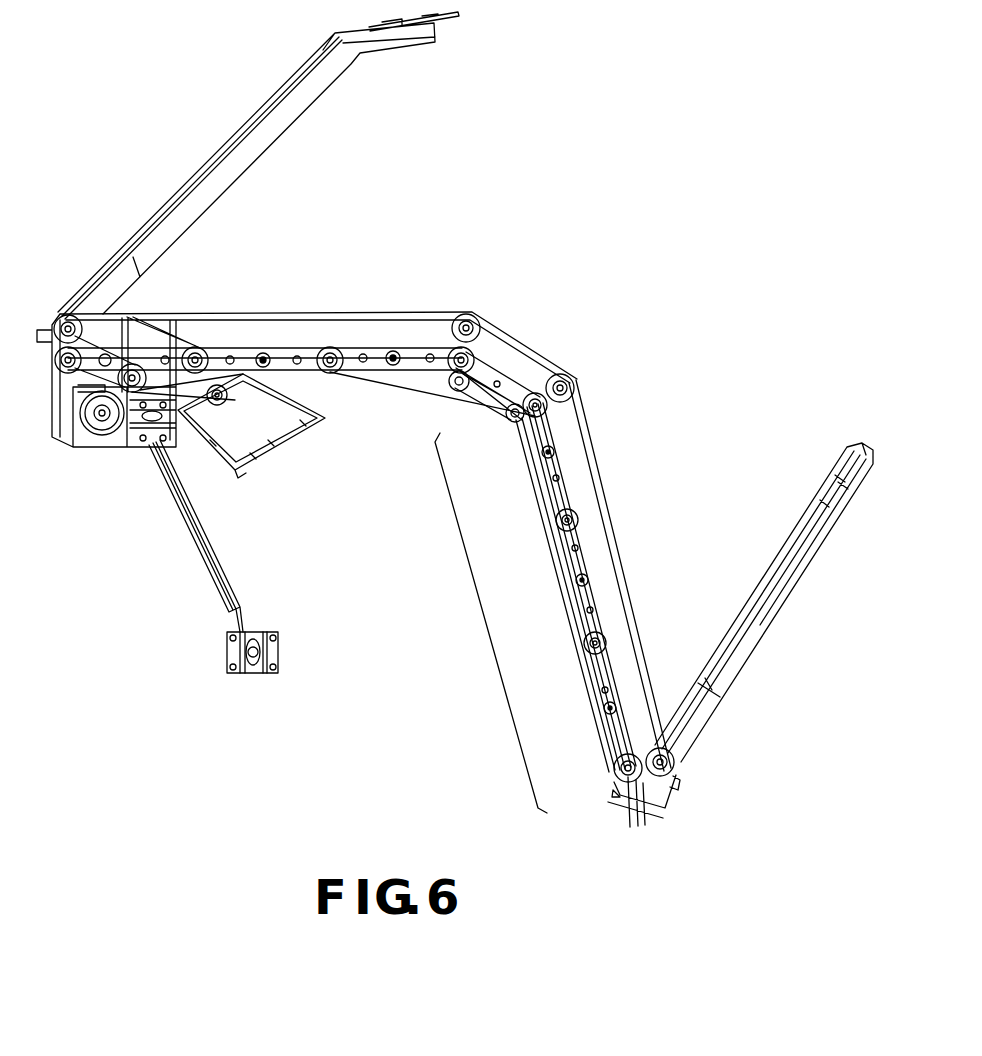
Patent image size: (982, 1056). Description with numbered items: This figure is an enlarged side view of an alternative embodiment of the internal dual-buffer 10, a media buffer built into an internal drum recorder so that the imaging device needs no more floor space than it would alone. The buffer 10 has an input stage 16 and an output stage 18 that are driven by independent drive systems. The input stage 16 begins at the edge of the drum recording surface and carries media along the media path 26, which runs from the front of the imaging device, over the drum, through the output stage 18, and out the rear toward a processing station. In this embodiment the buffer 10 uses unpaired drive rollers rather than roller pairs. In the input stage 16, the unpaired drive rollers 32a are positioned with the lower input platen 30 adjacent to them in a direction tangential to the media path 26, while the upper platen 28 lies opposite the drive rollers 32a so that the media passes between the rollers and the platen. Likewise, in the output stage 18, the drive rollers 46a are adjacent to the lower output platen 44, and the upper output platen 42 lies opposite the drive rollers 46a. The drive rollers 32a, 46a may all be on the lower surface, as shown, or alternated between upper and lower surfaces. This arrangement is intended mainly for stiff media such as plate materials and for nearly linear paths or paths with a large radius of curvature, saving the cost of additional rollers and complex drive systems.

The internal dual-buffer 10 is at (723, 181).
The input stage 16 is at (489, 630).
The output stage 18 is at (148, 291).
The media path 26 is at (370, 353).
The upper platen 28 is at (807, 505).
The lower input platen 30 is at (537, 480).
The drive rollers 32a is at (520, 430).
The upper output platen surface 42 is at (317, 104).
The lower output platen surface 44 is at (323, 418).
The drive roller 46a is at (203, 350).